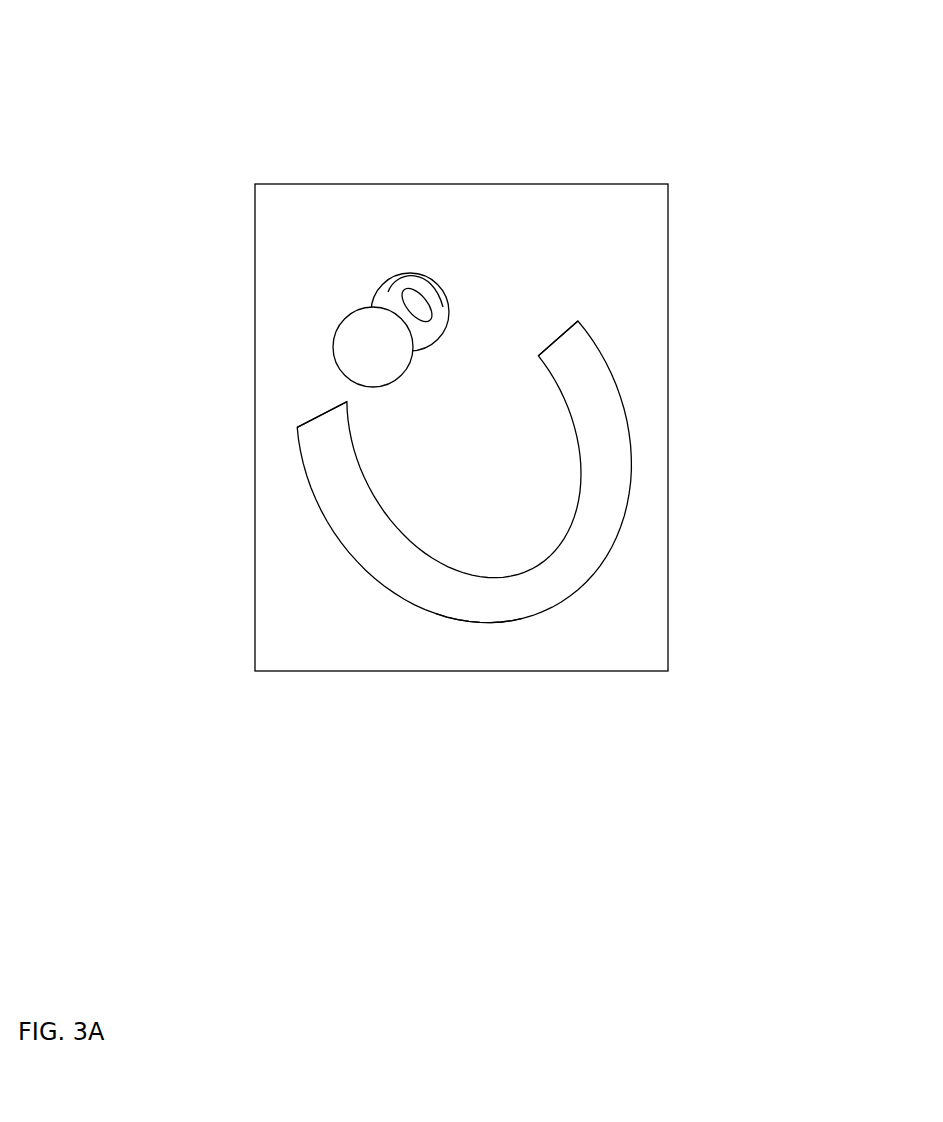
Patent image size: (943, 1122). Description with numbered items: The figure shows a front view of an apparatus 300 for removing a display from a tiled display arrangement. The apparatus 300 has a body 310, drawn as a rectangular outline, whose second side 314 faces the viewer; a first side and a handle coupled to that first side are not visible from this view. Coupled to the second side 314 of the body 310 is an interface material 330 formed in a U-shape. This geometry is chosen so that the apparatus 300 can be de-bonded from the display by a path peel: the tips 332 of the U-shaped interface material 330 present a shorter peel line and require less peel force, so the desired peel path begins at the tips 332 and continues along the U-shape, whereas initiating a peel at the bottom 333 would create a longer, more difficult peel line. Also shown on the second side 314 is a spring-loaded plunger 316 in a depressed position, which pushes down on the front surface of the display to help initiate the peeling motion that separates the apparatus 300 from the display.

The apparatus 300 is at (240, 85).
The body 310 is at (629, 241).
The second side 314 is at (629, 367).
The spring-loaded plunger 316 is at (373, 347).
The interface material 330 is at (610, 464).
The tips 332 is at (318, 416).
The bottom 333 is at (478, 596).